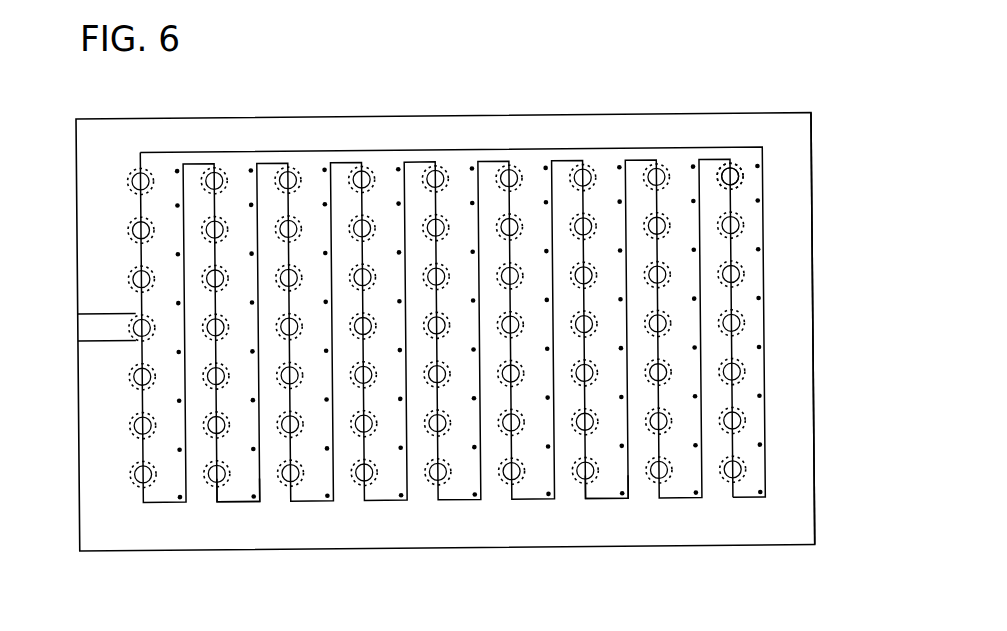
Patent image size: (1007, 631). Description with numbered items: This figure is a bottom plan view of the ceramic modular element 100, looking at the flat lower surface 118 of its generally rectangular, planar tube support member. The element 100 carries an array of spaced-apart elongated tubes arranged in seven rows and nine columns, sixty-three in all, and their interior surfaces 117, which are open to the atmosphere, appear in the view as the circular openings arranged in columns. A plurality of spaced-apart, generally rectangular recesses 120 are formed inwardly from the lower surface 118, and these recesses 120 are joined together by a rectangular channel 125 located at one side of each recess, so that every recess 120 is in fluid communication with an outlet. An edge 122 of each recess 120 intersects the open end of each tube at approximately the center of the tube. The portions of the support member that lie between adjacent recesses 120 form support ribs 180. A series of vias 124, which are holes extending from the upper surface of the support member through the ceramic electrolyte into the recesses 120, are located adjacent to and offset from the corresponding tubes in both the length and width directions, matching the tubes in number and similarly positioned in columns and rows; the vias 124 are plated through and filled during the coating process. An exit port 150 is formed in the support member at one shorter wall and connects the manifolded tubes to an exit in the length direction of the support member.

The ceramic modular element 100 is at (830, 297).
The interior surface 117 is at (727, 176).
The lower surface 118 is at (803, 160).
The recess 120 is at (311, 260).
The edge 122 is at (217, 492).
The via 124 is at (177, 205).
The channel 125 is at (635, 158).
The exit port 150 is at (86, 325).
The support rib 180 is at (498, 209).